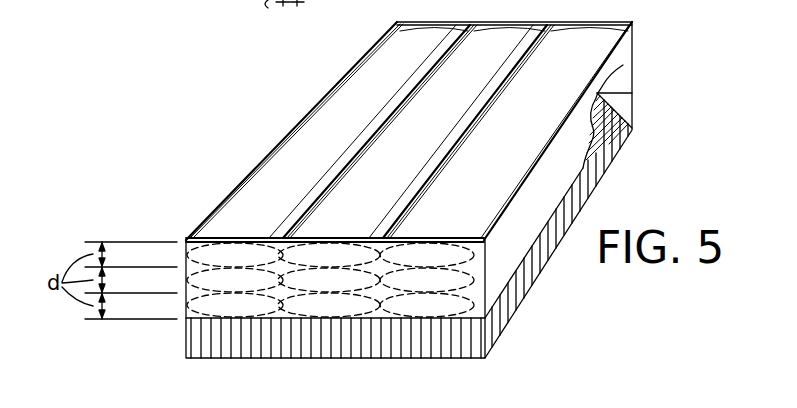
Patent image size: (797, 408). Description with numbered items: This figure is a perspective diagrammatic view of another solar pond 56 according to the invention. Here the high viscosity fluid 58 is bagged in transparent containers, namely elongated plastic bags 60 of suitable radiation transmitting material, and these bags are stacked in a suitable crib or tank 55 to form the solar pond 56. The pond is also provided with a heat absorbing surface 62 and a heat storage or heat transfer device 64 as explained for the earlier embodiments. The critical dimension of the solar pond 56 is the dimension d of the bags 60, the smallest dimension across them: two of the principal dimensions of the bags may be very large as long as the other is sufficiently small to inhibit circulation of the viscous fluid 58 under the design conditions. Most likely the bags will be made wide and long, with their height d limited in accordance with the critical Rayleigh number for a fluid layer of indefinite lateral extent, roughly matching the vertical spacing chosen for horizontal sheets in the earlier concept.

The crib or tank 55 is at (497, 267).
The solar pond 56 is at (248, 153).
The viscous fluid 58 is at (337, 300).
The elongated plastic bag 60 is at (337, 121).
The heat absorbing surface 62 is at (632, 127).
The heat storage or heat transfer device 64 is at (577, 191).